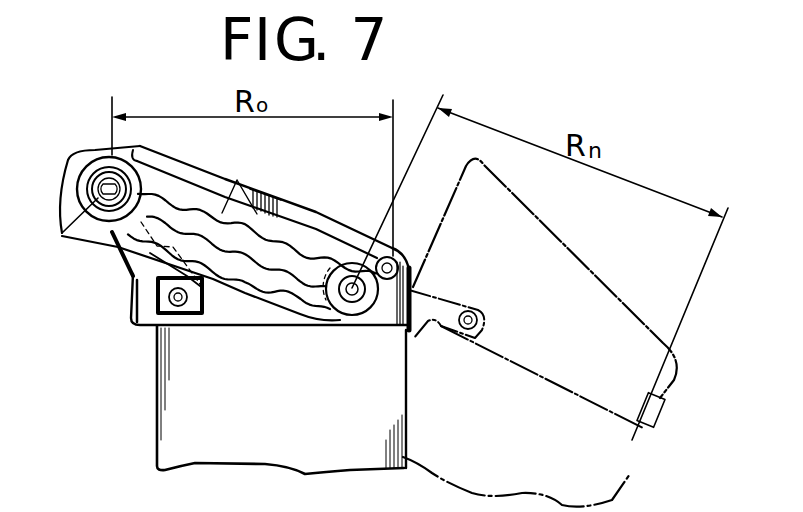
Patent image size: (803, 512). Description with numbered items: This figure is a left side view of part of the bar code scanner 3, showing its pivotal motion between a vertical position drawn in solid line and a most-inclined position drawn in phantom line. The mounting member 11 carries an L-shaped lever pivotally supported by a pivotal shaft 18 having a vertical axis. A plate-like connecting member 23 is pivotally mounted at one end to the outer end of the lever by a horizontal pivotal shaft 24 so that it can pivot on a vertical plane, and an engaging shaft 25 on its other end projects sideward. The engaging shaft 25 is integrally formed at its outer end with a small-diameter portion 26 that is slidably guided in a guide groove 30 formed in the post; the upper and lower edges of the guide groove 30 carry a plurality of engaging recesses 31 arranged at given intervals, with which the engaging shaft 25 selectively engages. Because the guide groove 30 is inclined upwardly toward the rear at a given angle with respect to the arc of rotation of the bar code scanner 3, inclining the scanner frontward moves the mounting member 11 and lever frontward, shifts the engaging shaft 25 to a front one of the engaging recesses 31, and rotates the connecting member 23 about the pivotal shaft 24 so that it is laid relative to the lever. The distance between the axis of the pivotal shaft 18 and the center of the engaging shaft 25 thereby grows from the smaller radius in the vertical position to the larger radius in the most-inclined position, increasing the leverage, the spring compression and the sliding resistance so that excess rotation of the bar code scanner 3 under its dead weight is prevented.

The bar code scanner 3 is at (178, 420).
The mounting member 11 is at (267, 312).
The pivotal shaft 18 is at (387, 313).
The connecting member 23 is at (121, 265).
The horizontal pivotal shaft 24 is at (160, 345).
The engaging shaft 25 is at (63, 233).
The small-diameter portion 26 is at (103, 181).
The guide groove 30 is at (277, 247).
The engaging recess 31 is at (237, 180).